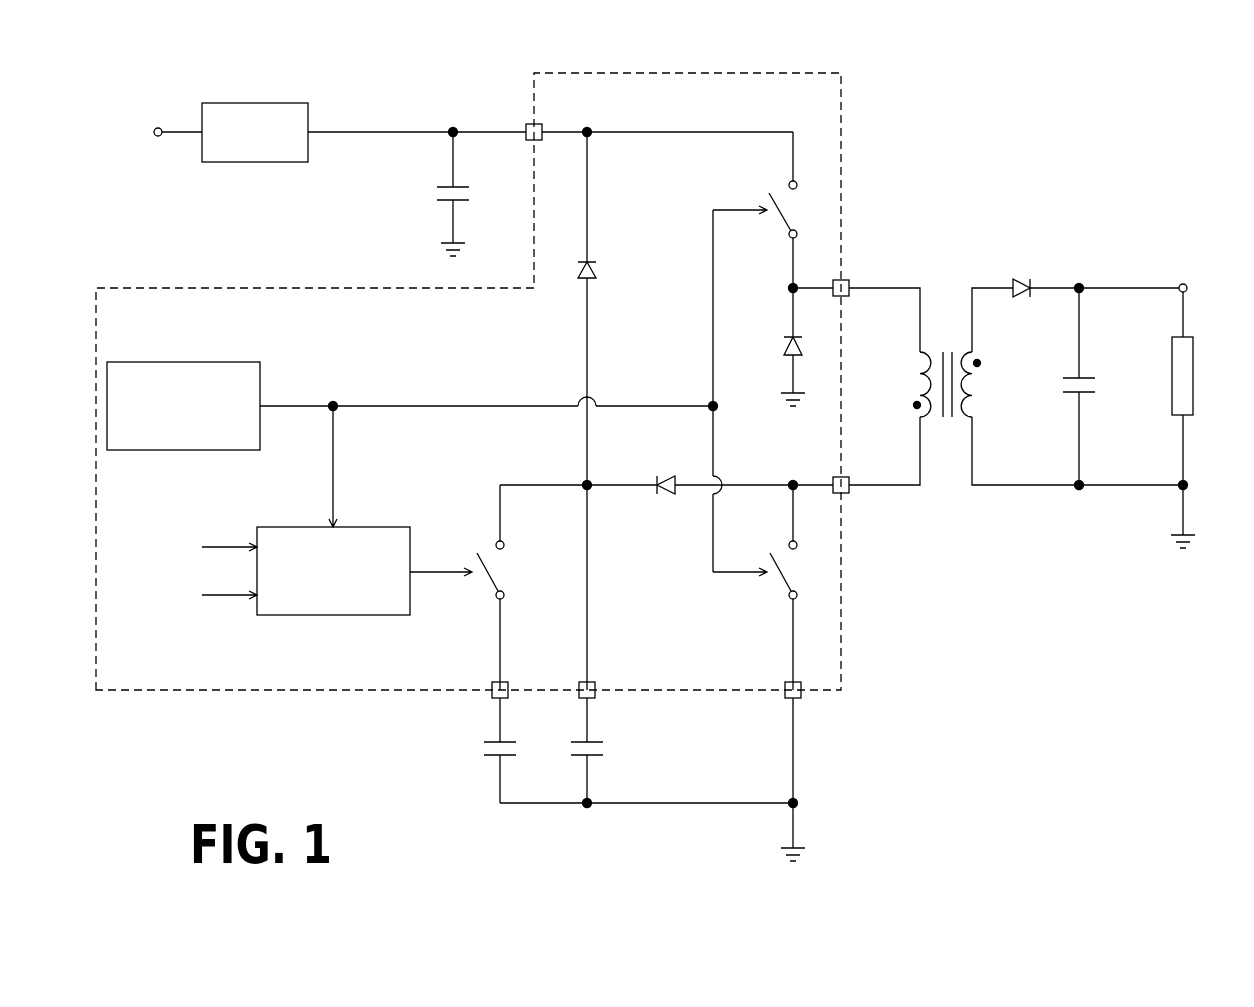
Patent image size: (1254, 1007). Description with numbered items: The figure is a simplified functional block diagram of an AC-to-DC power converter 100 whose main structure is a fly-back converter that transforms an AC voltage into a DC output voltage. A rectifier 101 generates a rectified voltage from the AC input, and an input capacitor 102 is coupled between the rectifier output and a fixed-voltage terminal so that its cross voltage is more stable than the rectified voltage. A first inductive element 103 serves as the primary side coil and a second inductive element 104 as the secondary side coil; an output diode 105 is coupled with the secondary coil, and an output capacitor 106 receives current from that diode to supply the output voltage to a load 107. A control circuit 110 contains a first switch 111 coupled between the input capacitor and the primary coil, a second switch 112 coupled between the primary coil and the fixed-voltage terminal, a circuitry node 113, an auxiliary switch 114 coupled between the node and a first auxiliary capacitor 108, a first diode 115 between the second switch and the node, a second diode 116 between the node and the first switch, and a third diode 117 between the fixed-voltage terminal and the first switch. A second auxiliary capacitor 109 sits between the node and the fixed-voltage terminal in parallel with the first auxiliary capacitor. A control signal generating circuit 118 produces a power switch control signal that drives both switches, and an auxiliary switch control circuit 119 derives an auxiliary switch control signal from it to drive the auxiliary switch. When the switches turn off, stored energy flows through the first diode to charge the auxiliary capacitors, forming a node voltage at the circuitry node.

The AC-to-DC power converter 100 is at (1183, 113).
The rectifier 101 is at (253, 103).
The input capacitor 102 is at (442, 193).
The first inductive element 103 is at (920, 383).
The second inductive element 104 is at (975, 385).
The output diode 105 is at (1022, 280).
The output capacitor 106 is at (1095, 385).
The load 107 is at (1197, 375).
The first auxiliary capacitor 108 is at (480, 750).
The second auxiliary capacitor 109 is at (597, 749).
The control circuit 110 is at (250, 288).
The first switch 111 is at (798, 210).
The second switch 112 is at (797, 570).
The circuitry node 113 is at (587, 484).
The auxiliary switch 114 is at (505, 572).
The first diode 115 is at (657, 490).
The second diode 116 is at (597, 271).
The third diode 117 is at (788, 348).
The control signal generating circuit 118 is at (183, 362).
The auxiliary switch control circuit 119 is at (333, 615).